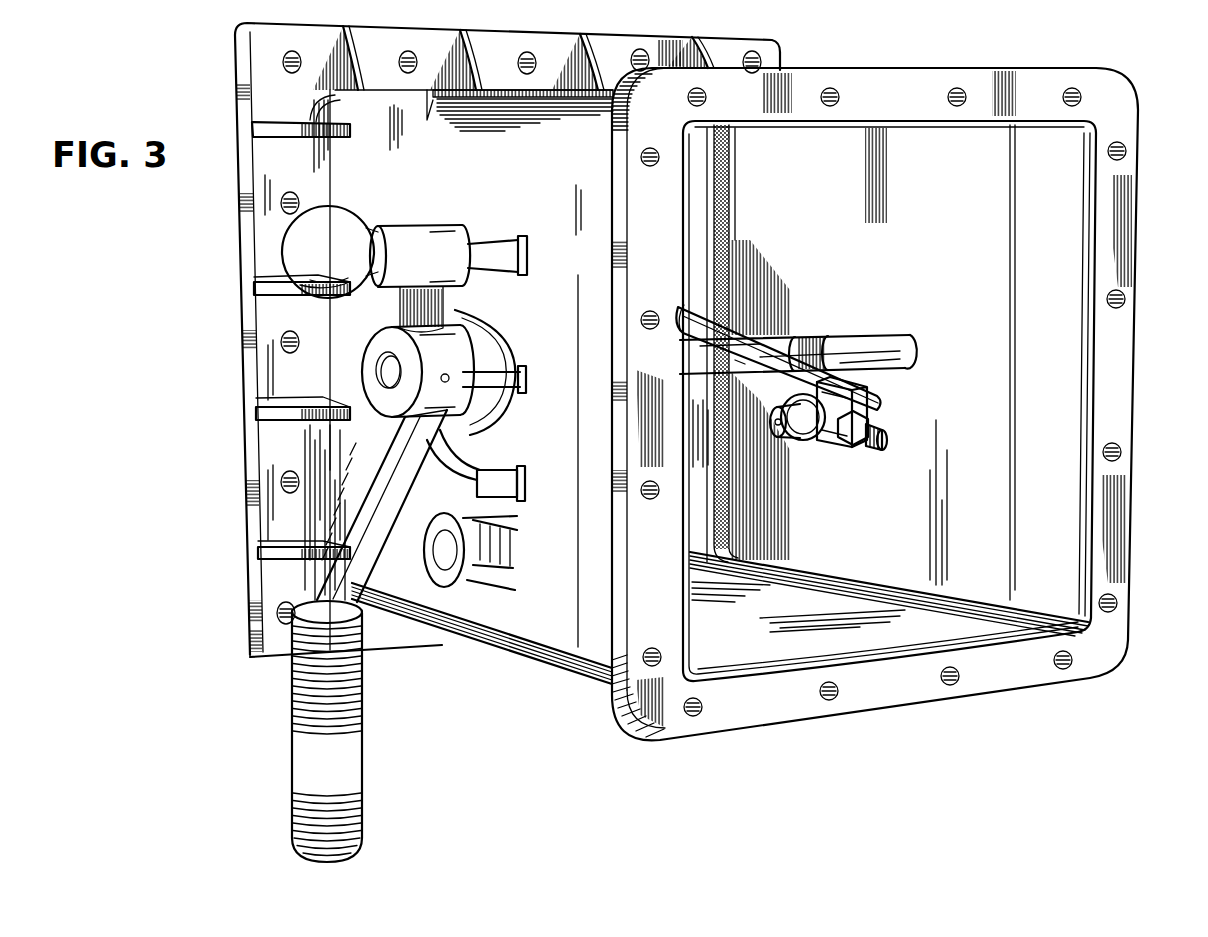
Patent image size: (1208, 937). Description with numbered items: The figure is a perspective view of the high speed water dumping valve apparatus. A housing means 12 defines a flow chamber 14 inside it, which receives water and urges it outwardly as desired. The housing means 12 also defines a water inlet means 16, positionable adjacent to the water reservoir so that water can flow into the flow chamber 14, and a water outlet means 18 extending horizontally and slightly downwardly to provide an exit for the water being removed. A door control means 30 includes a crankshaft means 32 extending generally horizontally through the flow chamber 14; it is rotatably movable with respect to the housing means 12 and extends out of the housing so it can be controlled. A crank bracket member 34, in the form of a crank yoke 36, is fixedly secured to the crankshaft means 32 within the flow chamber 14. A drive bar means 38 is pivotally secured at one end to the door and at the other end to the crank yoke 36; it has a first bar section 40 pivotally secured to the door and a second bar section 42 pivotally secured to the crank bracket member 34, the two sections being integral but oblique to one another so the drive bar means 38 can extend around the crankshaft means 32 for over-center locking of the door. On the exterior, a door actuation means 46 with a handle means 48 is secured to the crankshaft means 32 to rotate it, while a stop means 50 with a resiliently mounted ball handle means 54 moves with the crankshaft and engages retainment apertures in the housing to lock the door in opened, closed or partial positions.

The housing means 12 is at (568, 208).
The flow chamber 14 is at (923, 290).
The water inlet means 16 is at (717, 193).
The water outlet means 18 is at (1090, 119).
The door control means 30 is at (757, 340).
The crankshaft means 32 is at (853, 337).
The crank bracket member 34 is at (762, 403).
The crank yoke 36 is at (897, 397).
The drive bar means 38 is at (803, 335).
The first bar section 40 is at (680, 308).
The second bar section 42 is at (780, 438).
The door actuation means 46 is at (383, 342).
The handle means 48 is at (346, 780).
The stop means 50 is at (417, 248).
The resiliently mounted ball handle means 54 is at (340, 262).